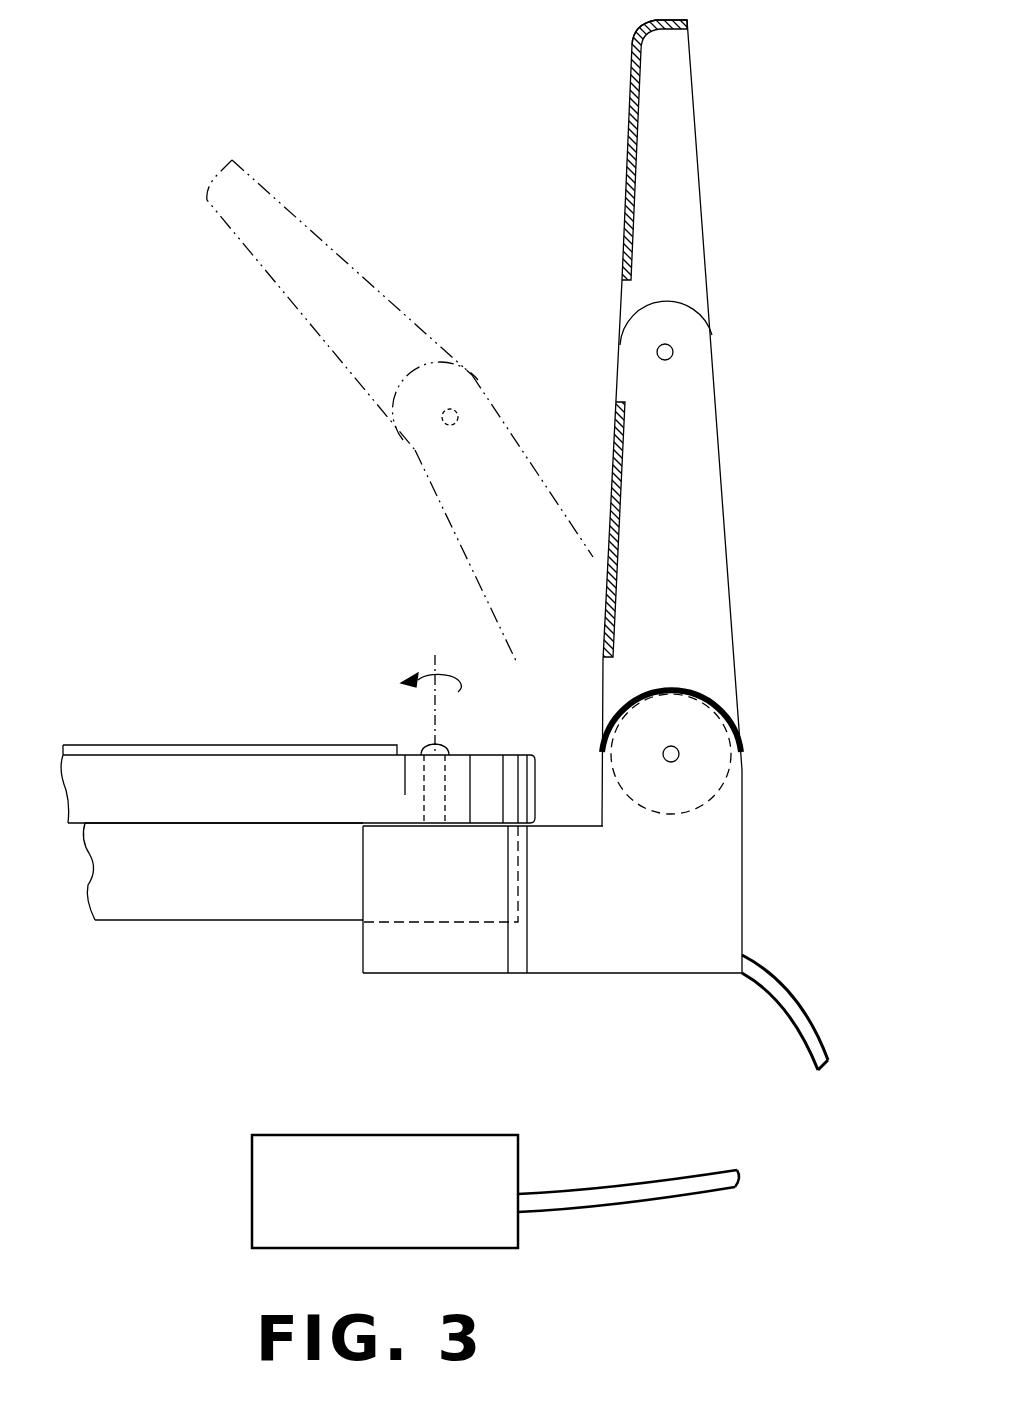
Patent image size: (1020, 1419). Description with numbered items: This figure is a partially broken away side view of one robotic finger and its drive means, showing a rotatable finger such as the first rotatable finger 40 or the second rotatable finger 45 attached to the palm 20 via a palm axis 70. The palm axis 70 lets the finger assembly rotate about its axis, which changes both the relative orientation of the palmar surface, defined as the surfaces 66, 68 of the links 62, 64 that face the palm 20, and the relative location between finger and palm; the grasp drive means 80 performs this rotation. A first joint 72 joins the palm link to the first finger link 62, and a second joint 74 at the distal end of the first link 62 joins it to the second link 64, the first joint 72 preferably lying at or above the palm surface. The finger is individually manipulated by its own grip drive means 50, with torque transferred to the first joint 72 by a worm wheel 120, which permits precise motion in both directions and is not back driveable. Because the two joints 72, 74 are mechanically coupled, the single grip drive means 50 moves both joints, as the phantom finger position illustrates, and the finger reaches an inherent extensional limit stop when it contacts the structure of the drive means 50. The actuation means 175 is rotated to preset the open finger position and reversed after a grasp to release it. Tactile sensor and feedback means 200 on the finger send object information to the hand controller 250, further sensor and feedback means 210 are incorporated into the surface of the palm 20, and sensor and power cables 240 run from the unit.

The palm 20 is at (298, 739).
The tactile sensor and feedback means 210 is at (218, 745).
The palm axis 70 is at (432, 732).
The grasp drive means 80 is at (130, 900).
The actuation means 175 is at (388, 957).
The grip drive means 50 is at (552, 929).
The first rotatable finger 40 is at (510, 486).
The second rotatable finger 45 is at (510, 486).
The second link 64 is at (510, 350).
The first finger link 62 is at (510, 350).
The second joint 74 is at (672, 345).
The palmar surface of the second link 68 is at (623, 222).
The palmar surface of the first link 66 is at (613, 518).
The tactile sensor means and feedback means 200 is at (626, 158).
The first joint 72 is at (679, 755).
The worm wheel 120 is at (712, 800).
The sensor and power cables 240 is at (782, 978).
The hand controller 250 is at (390, 1152).